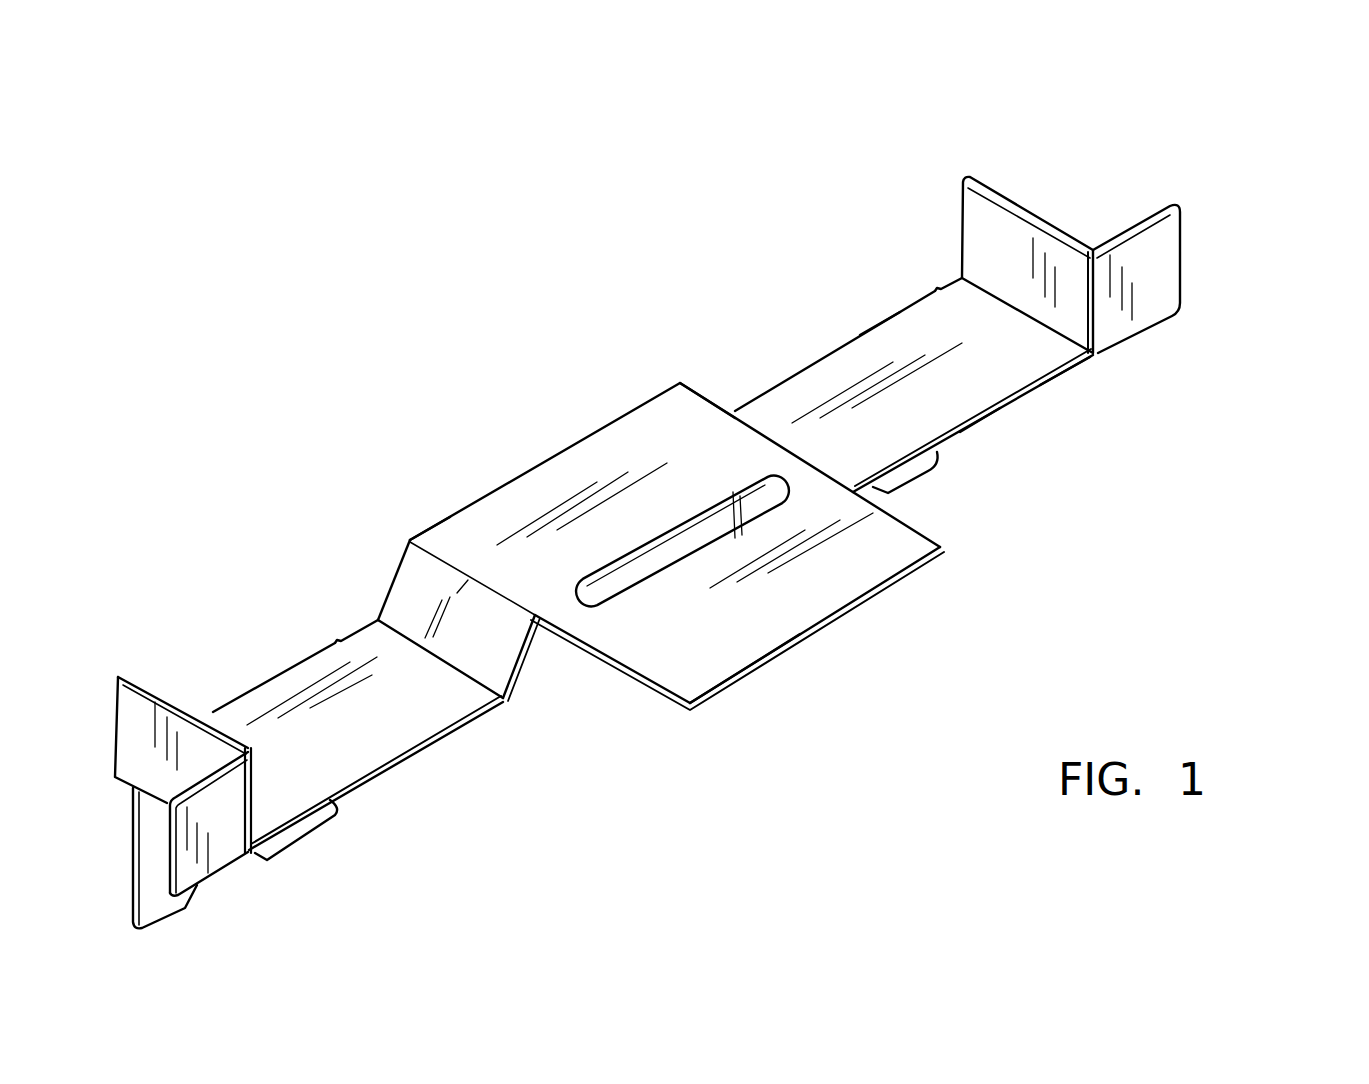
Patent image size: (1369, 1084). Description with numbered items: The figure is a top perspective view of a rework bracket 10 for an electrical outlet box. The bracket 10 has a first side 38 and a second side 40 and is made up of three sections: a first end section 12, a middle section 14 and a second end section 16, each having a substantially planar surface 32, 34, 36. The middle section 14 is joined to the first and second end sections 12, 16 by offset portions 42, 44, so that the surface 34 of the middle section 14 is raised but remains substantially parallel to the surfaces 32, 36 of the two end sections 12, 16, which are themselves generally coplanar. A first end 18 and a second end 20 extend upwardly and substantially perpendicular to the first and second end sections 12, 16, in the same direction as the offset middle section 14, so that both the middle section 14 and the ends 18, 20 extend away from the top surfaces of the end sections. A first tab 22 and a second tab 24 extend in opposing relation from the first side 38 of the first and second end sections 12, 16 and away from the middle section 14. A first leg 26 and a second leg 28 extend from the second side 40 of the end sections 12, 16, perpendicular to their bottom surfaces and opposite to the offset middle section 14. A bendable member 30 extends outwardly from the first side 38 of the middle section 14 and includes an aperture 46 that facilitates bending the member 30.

The bracket 10 is at (1050, 148).
The first end section 12 is at (293, 670).
The middle section 14 is at (620, 460).
The second end section 16 is at (813, 387).
The first end 18 is at (140, 713).
The second end 20 is at (1007, 250).
The first tab 22 is at (218, 825).
The second tab 24 is at (1133, 278).
The first leg 26 is at (330, 820).
The second leg 28 is at (913, 473).
The bendable member 30 is at (768, 595).
The planar surface of first end section 32 is at (337, 727).
The planar surface of middle section 34 is at (468, 533).
The planar surface of second end section 36 is at (973, 385).
The first side 38 is at (1048, 377).
The second side 40 is at (877, 315).
The offset portion 42 is at (408, 592).
The offset portion 44 is at (700, 393).
The aperture 46 is at (657, 558).